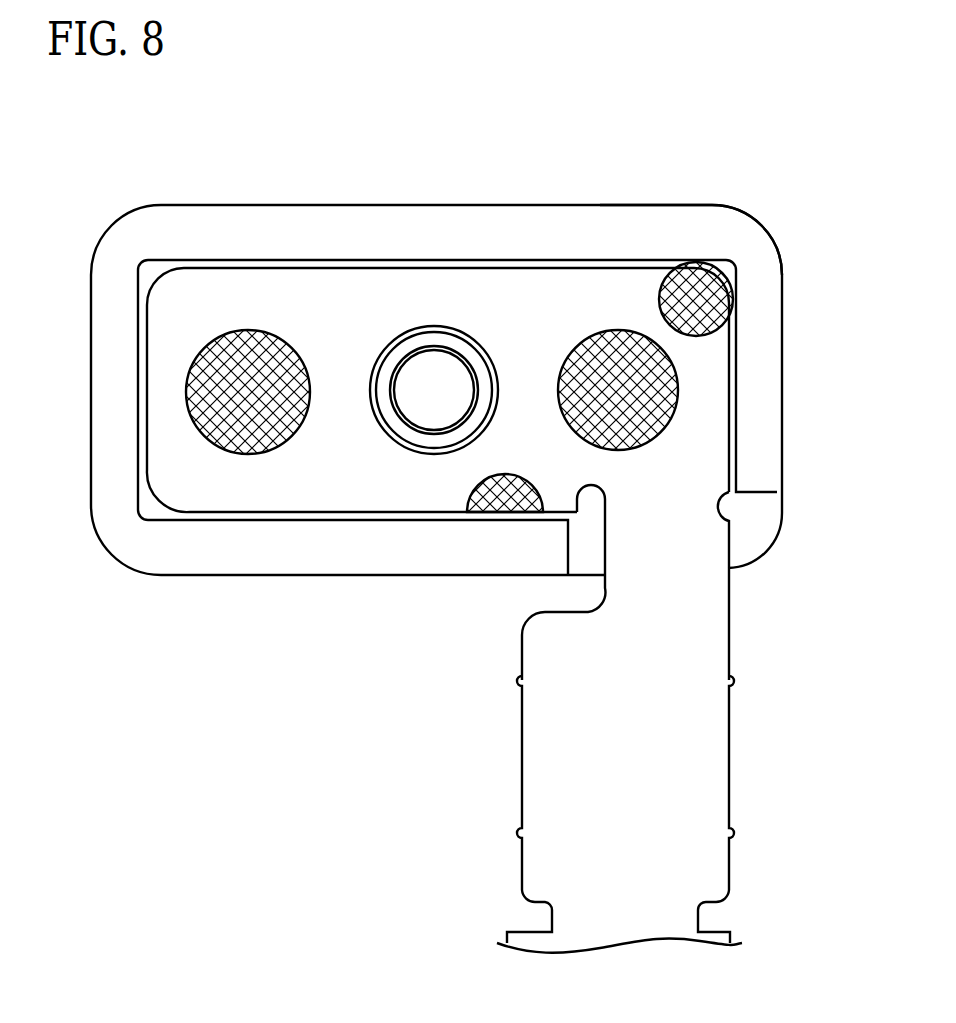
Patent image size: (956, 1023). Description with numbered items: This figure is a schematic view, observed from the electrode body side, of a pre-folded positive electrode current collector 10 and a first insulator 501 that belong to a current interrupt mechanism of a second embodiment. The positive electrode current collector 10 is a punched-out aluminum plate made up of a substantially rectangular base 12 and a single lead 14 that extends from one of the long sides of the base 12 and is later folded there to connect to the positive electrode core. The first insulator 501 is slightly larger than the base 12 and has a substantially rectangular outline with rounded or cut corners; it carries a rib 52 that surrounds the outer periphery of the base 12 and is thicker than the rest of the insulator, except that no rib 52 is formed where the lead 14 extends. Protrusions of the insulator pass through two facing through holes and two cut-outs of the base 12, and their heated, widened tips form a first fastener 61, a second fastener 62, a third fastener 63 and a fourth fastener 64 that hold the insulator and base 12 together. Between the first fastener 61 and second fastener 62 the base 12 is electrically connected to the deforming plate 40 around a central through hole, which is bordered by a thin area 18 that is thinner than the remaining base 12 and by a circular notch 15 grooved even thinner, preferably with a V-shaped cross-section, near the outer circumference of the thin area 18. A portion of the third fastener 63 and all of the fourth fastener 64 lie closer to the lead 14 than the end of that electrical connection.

The first insulator 501 is at (688, 204).
The positive electrode current collector 10 is at (465, 768).
The base 12 is at (335, 490).
The lead 14 is at (543, 723).
The notch 15 is at (375, 418).
The thin area 18 is at (432, 445).
The deforming plate 40 is at (425, 370).
The rib 52 is at (200, 548).
The first fastener 61 is at (247, 350).
The second fastener 62 is at (627, 350).
The third fastener 63 is at (512, 480).
The fourth fastener 64 is at (716, 288).